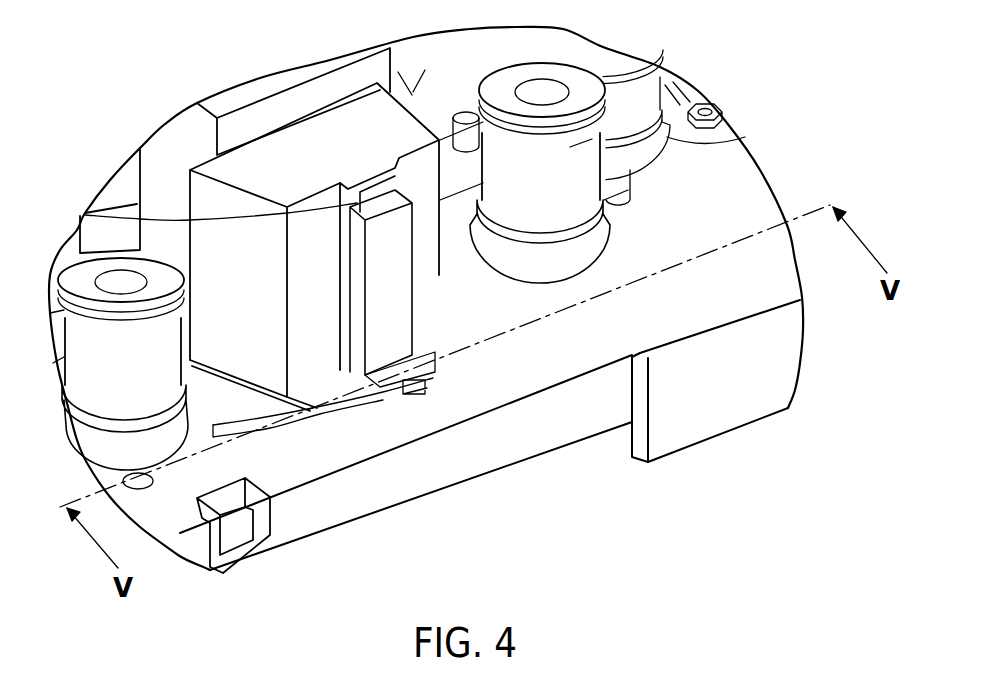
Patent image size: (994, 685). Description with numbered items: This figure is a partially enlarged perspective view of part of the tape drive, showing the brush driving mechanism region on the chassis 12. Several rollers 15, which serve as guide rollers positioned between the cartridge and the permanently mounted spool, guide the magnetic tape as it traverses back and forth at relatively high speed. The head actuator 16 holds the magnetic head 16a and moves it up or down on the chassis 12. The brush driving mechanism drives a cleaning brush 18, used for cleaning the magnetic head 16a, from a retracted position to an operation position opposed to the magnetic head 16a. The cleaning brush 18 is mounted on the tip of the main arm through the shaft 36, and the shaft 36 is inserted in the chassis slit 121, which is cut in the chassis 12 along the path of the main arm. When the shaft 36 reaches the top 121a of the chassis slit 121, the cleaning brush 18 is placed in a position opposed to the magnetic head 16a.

The chassis 12 is at (343, 535).
The rollers 15 is at (637, 92).
The head actuator 16 is at (440, 275).
The magnetic head 16a is at (137, 204).
The cleaning brush 18 is at (448, 318).
The shaft 36 is at (413, 378).
The chassis slit 121 is at (337, 417).
The top of the chassis slit 121a is at (433, 373).